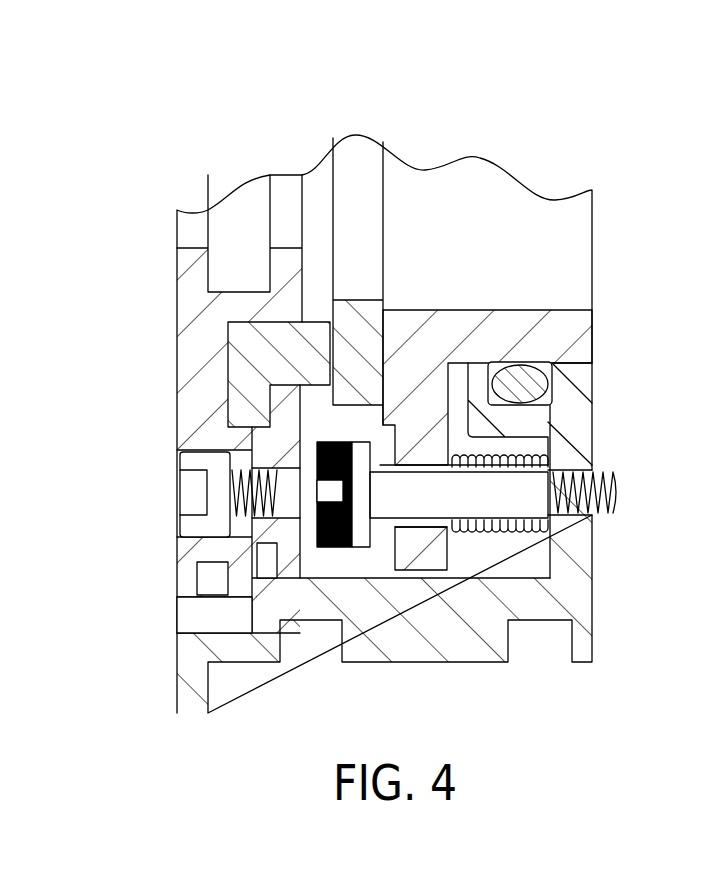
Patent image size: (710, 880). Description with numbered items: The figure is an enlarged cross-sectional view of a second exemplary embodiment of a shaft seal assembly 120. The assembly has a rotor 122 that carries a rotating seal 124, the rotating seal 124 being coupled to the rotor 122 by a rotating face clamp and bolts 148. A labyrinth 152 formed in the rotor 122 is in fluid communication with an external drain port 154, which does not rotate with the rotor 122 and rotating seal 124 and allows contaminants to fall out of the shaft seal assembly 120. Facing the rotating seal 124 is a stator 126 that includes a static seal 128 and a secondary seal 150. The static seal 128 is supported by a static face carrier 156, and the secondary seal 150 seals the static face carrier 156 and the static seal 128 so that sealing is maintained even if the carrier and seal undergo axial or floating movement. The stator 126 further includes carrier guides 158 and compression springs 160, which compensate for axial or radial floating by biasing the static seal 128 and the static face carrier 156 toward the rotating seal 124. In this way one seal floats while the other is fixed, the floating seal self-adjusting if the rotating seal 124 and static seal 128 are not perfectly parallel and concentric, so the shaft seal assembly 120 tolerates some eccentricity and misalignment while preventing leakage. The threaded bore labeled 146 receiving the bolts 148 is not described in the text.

The shaft seal assembly 120 is at (550, 83).
The rotor 122 is at (190, 292).
The rotating seal 124 is at (230, 342).
The stator 126 is at (585, 615).
The static seal 128 is at (368, 264).
The threaded bore 146 is at (258, 445).
The bolts 148 is at (190, 483).
The secondary seal 150 is at (540, 392).
The labyrinth 152 is at (212, 575).
The external drain port 154 is at (190, 621).
The static face carrier 156 is at (570, 322).
The carrier guides 158 is at (615, 487).
The compression springs 160 is at (552, 518).